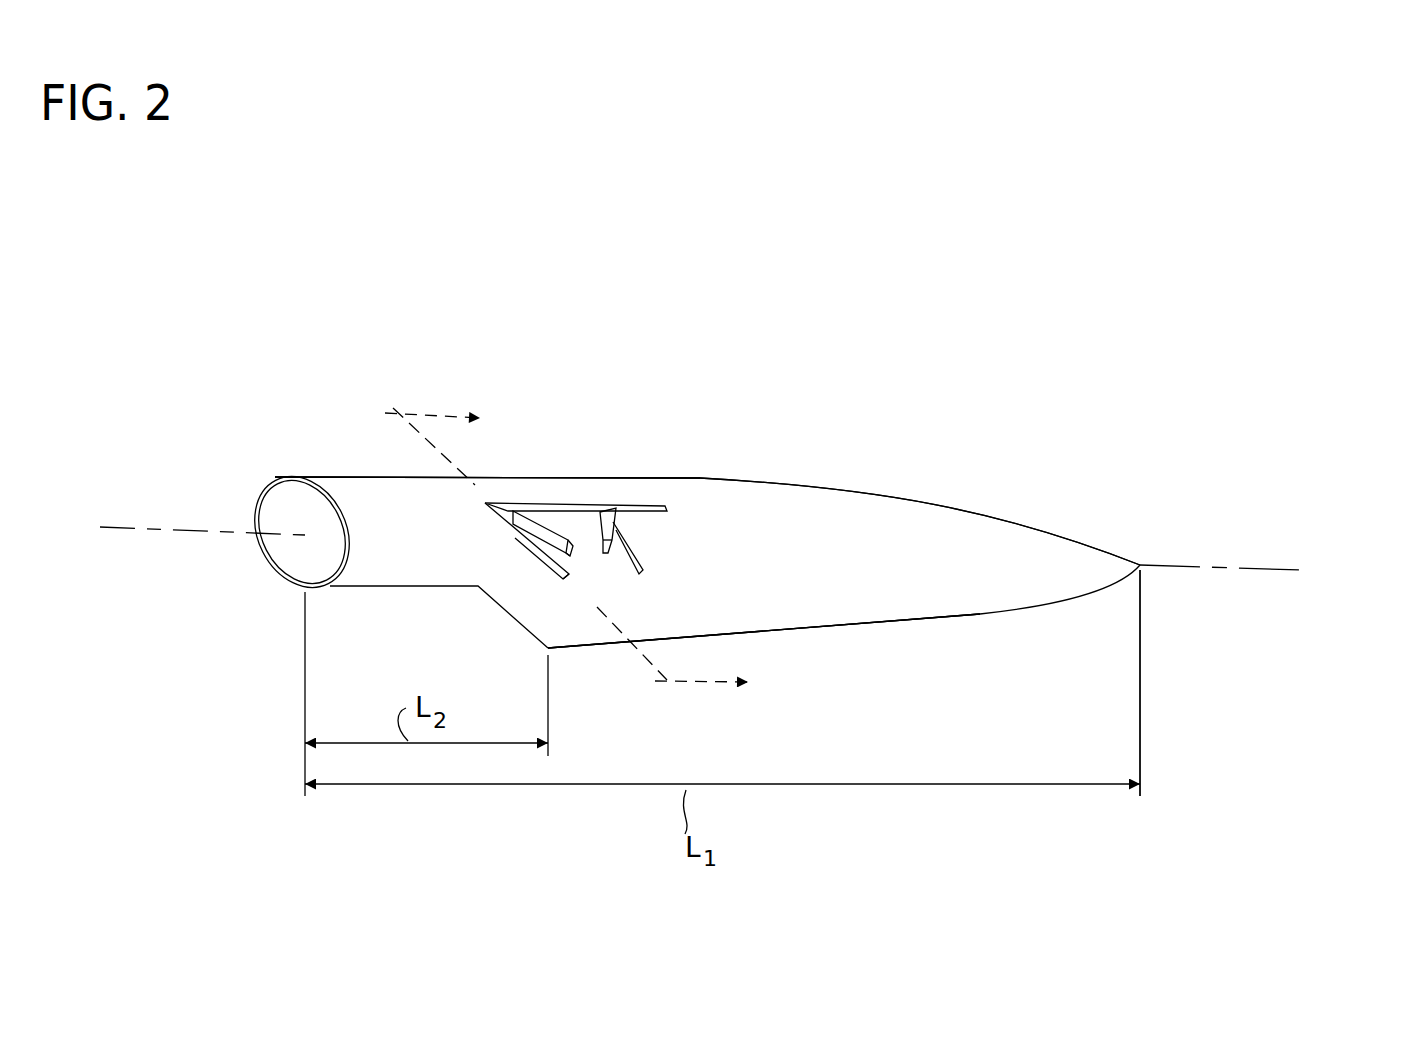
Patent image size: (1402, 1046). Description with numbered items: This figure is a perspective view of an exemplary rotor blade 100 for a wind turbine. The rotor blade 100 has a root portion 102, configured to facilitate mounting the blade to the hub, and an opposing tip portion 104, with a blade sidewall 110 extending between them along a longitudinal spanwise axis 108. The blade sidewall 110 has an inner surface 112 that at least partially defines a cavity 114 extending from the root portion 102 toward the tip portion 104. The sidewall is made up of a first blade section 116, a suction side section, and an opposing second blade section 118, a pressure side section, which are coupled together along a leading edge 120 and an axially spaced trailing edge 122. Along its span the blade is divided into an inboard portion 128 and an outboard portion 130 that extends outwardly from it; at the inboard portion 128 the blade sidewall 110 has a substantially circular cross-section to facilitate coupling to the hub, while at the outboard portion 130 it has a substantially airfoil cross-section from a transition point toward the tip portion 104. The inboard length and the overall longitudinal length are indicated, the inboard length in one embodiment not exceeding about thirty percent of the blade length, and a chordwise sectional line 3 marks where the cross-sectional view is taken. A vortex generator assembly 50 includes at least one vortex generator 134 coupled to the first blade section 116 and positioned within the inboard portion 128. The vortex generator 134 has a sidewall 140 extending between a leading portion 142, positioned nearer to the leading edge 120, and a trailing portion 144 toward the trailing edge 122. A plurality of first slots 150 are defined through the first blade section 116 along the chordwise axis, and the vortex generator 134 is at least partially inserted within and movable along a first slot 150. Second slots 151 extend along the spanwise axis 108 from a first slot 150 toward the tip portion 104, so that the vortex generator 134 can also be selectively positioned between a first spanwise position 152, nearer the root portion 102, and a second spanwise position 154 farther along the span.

The rotor blade 100 is at (1140, 267).
The root portion 102 is at (285, 452).
The tip portion 104 is at (1142, 520).
The longitudinal spanwise axis 108 is at (1262, 566).
The blade sidewall 110 is at (430, 478).
The inner surface 112 is at (310, 560).
The cavity 114 is at (298, 545).
The first blade section 116 is at (840, 527).
The second blade section 118 is at (800, 666).
The leading edge 120 is at (937, 498).
The trailing edge 122 is at (982, 614).
The inboard portion 128 is at (368, 440).
The outboard portion 130 is at (1072, 494).
The vortex generator 134 is at (545, 515).
The sidewall 140 is at (537, 540).
The leading portion 142 is at (520, 507).
The trailing portion 144 is at (572, 553).
The first slot 150 is at (565, 577).
The second slot 151 is at (665, 512).
The first spanwise position 152 is at (507, 540).
The second spanwise position 154 is at (619, 569).
The vortex generator assembly 50 is at (543, 543).
The chordwise sectional line 3 is at (557, 549).